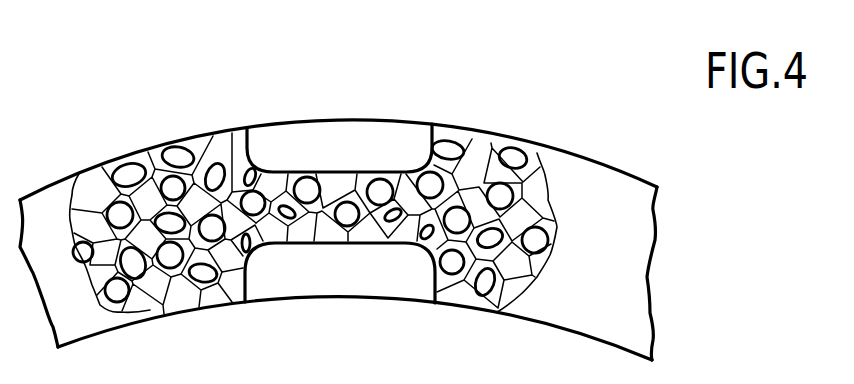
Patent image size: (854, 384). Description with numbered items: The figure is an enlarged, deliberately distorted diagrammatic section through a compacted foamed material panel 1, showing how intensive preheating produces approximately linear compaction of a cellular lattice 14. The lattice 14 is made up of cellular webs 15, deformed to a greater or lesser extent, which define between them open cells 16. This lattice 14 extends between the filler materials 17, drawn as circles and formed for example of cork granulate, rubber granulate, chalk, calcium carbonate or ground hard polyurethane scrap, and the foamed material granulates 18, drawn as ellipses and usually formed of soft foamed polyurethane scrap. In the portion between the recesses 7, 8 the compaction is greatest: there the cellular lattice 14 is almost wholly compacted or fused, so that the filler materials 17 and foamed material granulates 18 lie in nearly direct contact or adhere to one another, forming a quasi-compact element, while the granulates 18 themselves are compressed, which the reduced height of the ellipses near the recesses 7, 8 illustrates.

The friction ring body 1 is at (568, 119).
The recess 7 is at (389, 165).
The recess 8 is at (388, 247).
The cellular lattice 14 is at (477, 148).
The cellular web 15 is at (204, 147).
The open cell 16 is at (153, 167).
The filler material 17 is at (117, 293).
The foamed material granulate 18 is at (127, 172).